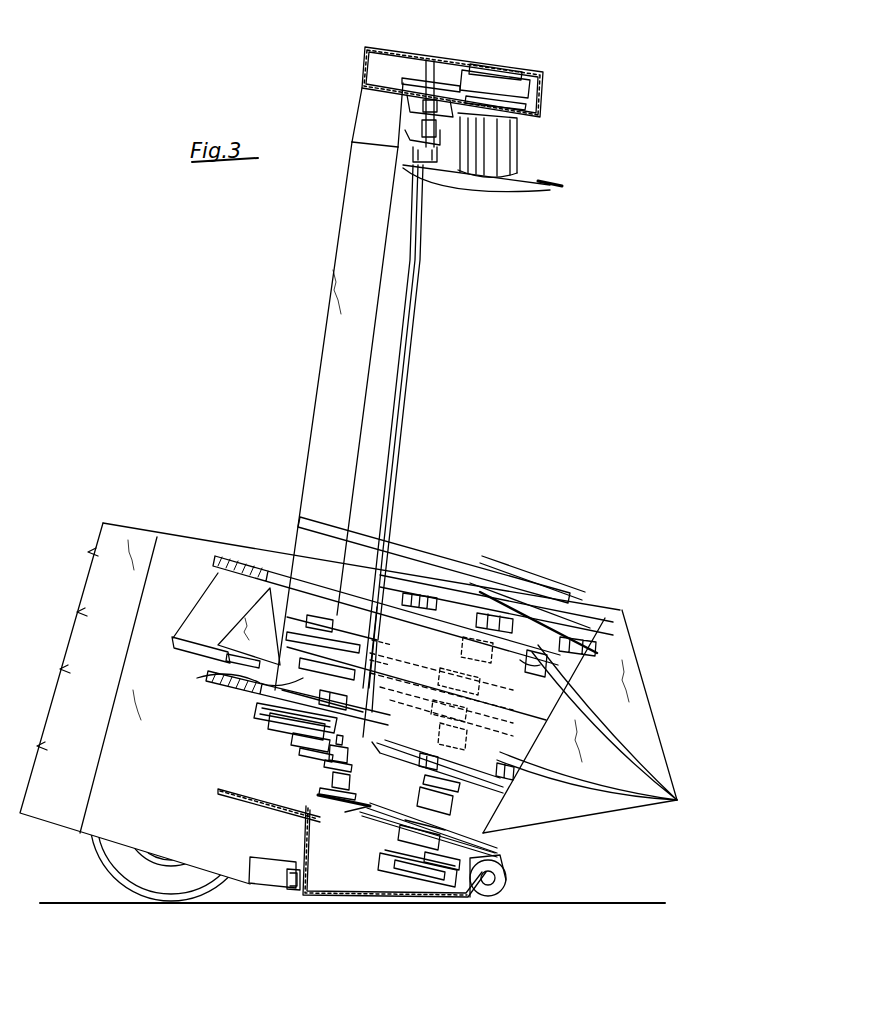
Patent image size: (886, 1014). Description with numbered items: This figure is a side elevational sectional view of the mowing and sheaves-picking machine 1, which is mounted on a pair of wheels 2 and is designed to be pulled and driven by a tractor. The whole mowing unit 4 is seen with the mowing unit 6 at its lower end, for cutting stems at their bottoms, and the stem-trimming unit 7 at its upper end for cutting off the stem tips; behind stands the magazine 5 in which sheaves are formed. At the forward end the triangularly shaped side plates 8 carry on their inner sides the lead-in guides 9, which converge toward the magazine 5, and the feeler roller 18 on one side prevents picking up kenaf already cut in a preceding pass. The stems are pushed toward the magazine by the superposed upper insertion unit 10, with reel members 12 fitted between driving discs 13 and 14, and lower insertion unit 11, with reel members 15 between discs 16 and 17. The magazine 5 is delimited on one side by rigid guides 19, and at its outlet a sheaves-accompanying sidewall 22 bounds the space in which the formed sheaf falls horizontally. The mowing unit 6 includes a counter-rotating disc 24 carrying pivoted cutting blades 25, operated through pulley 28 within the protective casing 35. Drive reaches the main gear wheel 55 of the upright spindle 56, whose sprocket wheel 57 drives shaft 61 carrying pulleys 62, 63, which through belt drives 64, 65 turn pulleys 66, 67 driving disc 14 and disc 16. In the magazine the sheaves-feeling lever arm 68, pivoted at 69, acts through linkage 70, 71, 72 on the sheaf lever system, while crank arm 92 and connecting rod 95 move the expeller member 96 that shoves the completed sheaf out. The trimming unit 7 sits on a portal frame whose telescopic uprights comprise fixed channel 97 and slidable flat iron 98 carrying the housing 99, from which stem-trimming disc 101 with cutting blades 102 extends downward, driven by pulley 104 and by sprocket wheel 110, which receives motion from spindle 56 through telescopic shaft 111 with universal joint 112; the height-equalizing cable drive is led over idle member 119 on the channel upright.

The mowing and sheaves-picking machine 1 is at (203, 424).
The wheels 2 is at (110, 868).
The mowing unit 4 is at (514, 346).
The magazine 5 is at (207, 537).
The mowing unit 6 is at (507, 839).
The stem-trimming unit 7 is at (560, 95).
The side plates 8 is at (625, 640).
The lead-in guides 9 is at (666, 790).
The upper insertion unit 10 is at (553, 615).
The lower insertion unit 11 is at (528, 785).
The reel members 12 is at (428, 594).
The driving disc 13 is at (520, 605).
The driving disc 14 is at (520, 664).
The reel members 15 is at (428, 755).
The disc 16 is at (480, 745).
The disc 17 is at (480, 787).
The feeler roller 18 is at (508, 880).
The rigid guides 19 is at (245, 572).
The sheaves-accompanying sidewall 22 is at (117, 540).
The counter-rotating disc 24 is at (378, 834).
The cutting blades 25 is at (500, 853).
The pulley 28 is at (380, 863).
The protective casing 35 is at (370, 897).
The main gear wheel 55 is at (367, 801).
The upright spindle 56 is at (360, 770).
The sprocket wheel 57 is at (330, 776).
The shaft 61 is at (230, 670).
The pulley 62 is at (303, 605).
The pulley 63 is at (362, 660).
The belt drive 64 is at (425, 668).
The belt drive 65 is at (385, 660).
The pulley 66 is at (505, 684).
The pulley 67 is at (500, 726).
The sheaves-feeling lever arm 68 is at (348, 702).
The pivot 69 is at (320, 754).
The linkage member 70 is at (296, 744).
The linkage member 71 is at (270, 730).
The lever arm 72 is at (258, 718).
The crank arm 92 is at (290, 660).
The connecting rod 95 is at (196, 630).
The expeller member 96 is at (247, 600).
The channel 97 is at (337, 300).
The flat iron 98 is at (362, 113).
The housing 99 is at (387, 46).
The stem-trimming upper disc 101 is at (500, 186).
The cutting blades 102 is at (551, 190).
The pulley 104 is at (510, 70).
The second sprocket wheel 110 is at (440, 80).
The telescopic shaft 111 is at (422, 232).
The universal joint 112 is at (420, 137).
The idle member 119 is at (296, 889).